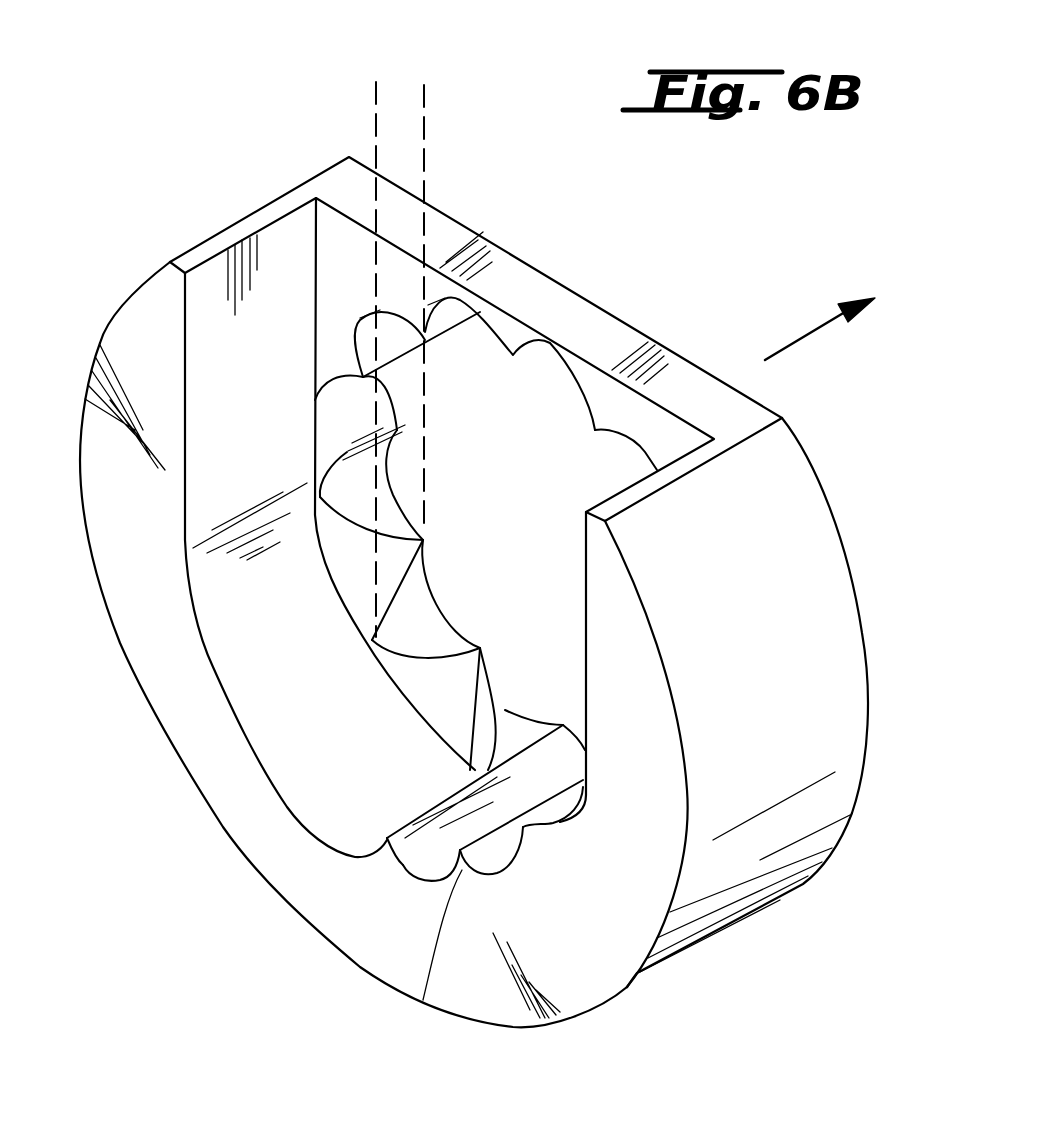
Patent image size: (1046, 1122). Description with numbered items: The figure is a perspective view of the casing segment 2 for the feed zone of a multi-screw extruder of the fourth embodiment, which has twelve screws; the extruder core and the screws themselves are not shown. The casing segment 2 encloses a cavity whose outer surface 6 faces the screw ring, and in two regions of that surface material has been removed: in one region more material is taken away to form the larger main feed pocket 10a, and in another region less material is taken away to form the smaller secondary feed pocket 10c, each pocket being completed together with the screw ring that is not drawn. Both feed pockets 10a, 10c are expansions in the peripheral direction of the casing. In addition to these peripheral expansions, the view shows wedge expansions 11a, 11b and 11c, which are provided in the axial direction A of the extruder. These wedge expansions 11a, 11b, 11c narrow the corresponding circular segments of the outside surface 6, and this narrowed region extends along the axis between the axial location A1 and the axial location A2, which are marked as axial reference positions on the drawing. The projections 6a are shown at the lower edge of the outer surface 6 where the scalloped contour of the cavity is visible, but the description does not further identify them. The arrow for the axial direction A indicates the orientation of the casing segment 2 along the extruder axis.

The casing segment 2 is at (840, 635).
The outer surface of the cavity 6 is at (257, 693).
The protrusions 6a is at (397, 865).
The main feed pocket 10a is at (288, 242).
The secondary feed pocket 10c is at (655, 415).
The wedge expansion 11a is at (360, 567).
The wedge expansion 11b is at (440, 693).
The wedge expansion 11c is at (500, 755).
The axial location A1 is at (376, 115).
The axial location A2 is at (424, 115).
The axial direction A is at (820, 324).